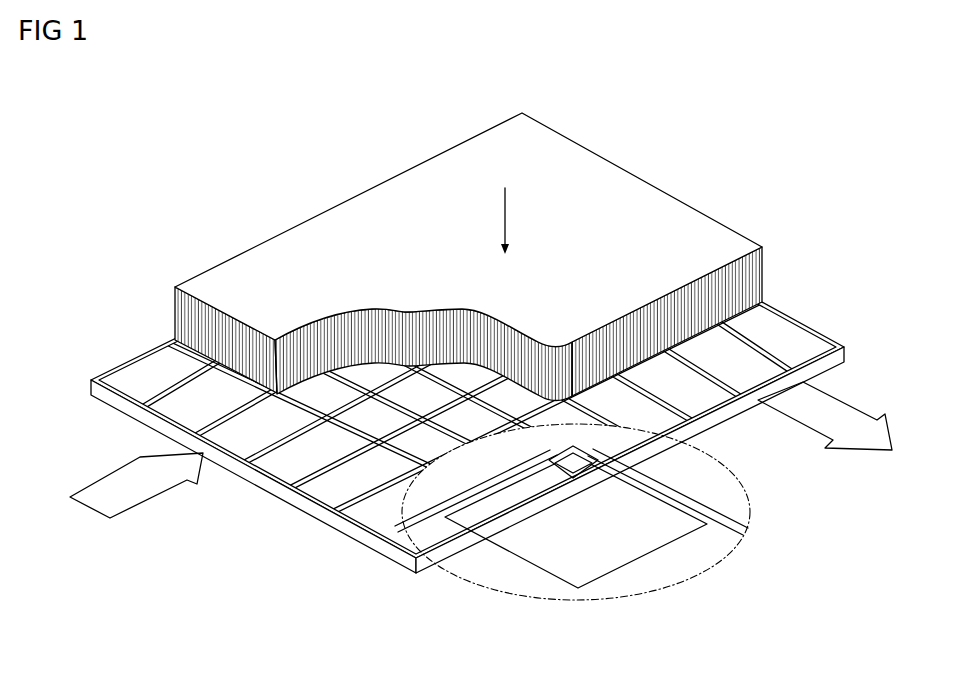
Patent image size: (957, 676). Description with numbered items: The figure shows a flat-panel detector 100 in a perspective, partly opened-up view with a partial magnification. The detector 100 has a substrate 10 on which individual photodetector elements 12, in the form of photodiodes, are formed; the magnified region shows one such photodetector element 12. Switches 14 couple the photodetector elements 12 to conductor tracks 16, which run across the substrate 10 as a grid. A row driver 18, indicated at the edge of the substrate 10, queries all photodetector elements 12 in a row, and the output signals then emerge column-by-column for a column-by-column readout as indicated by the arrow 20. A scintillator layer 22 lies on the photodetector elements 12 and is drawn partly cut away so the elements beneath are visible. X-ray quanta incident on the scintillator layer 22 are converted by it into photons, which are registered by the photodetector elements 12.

The flat-panel detector 100 is at (207, 146).
The substrate 10 is at (295, 503).
The photodetector elements 12 is at (638, 550).
The switches 14 is at (585, 471).
The conductor tracks 16 is at (657, 399).
The row driver 18 is at (133, 504).
The arrow 20 is at (855, 444).
The scintillator layer 22 is at (757, 273).